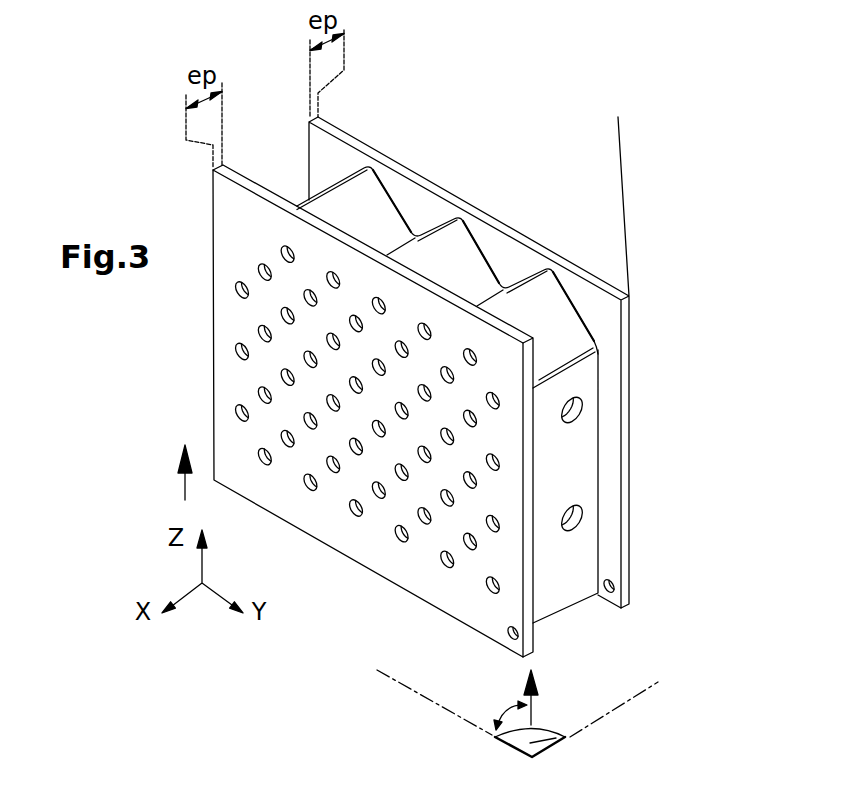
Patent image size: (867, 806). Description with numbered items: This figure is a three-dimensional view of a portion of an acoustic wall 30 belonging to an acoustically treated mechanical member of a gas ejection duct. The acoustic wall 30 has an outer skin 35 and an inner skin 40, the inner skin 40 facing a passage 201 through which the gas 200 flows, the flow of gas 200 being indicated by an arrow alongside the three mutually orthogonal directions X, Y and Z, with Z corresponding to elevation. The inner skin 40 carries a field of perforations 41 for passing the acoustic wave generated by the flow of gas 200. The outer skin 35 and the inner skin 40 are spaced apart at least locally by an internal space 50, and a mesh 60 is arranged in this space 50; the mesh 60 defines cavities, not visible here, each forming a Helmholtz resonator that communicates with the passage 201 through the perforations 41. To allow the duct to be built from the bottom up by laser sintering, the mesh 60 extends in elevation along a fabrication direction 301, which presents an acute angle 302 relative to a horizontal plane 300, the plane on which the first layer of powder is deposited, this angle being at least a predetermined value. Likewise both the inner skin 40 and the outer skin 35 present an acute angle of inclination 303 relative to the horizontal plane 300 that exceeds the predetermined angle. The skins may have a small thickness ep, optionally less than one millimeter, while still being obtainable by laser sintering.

The acoustic wall 30 is at (598, 636).
The outer skin 35 is at (625, 383).
The inner skin 40 is at (490, 608).
The perforations 41 is at (352, 512).
The internal space 50 is at (583, 609).
The mesh 60 is at (540, 303).
The gas 200 is at (184, 487).
The passage 201 is at (293, 656).
The horizontal plane 300 is at (553, 740).
The fabrication direction 301 is at (531, 714).
The acute angle 302 is at (490, 702).
The acute angle of inclination 303 is at (436, 727).